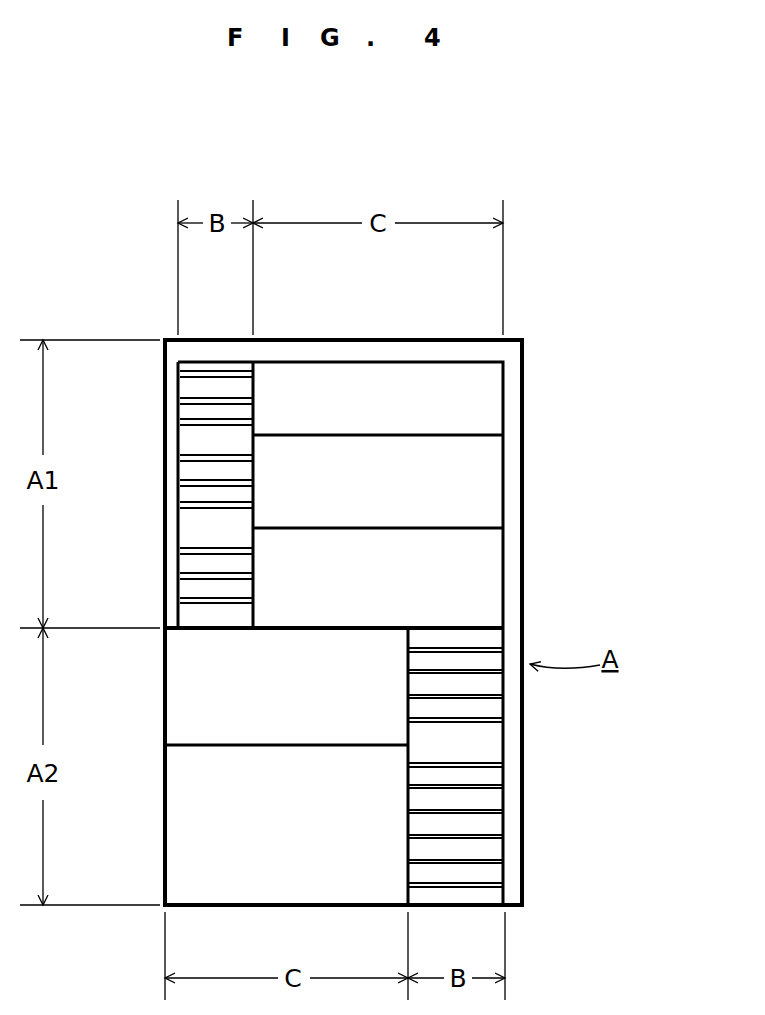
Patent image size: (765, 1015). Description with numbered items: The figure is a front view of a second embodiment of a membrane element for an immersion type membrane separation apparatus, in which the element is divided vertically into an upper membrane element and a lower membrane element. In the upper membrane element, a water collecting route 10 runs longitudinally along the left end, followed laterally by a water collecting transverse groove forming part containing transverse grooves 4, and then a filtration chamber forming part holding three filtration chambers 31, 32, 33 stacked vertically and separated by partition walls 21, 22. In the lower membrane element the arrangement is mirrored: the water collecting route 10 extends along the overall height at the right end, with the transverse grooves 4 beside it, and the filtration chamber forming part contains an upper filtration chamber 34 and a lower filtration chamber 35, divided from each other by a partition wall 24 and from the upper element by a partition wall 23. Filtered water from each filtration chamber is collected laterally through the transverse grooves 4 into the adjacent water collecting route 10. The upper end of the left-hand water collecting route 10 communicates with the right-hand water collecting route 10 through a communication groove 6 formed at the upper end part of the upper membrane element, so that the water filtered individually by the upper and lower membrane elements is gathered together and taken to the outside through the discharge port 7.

The transverse groove 4 is at (190, 490).
The communication groove 6 is at (440, 350).
The discharge port 7 is at (510, 352).
The water collecting route 10 is at (166, 412).
The partition wall 21 is at (488, 424).
The partition wall 22 is at (496, 521).
The partition wall 23 is at (305, 630).
The partition wall 24 is at (210, 748).
The filtration chamber 31 is at (305, 385).
The filtration chamber 32 is at (500, 460).
The filtration chamber 33 is at (487, 577).
The filtration chamber 34 is at (188, 685).
The filtration chamber 35 is at (188, 852).